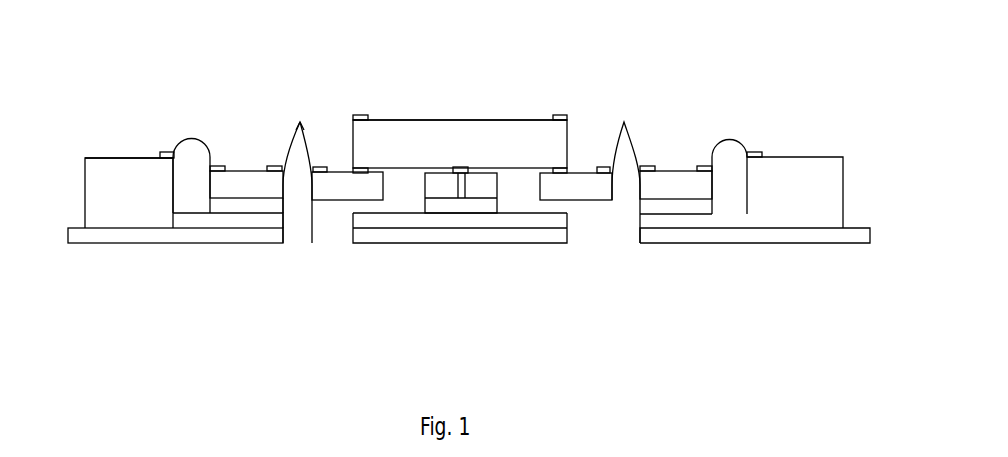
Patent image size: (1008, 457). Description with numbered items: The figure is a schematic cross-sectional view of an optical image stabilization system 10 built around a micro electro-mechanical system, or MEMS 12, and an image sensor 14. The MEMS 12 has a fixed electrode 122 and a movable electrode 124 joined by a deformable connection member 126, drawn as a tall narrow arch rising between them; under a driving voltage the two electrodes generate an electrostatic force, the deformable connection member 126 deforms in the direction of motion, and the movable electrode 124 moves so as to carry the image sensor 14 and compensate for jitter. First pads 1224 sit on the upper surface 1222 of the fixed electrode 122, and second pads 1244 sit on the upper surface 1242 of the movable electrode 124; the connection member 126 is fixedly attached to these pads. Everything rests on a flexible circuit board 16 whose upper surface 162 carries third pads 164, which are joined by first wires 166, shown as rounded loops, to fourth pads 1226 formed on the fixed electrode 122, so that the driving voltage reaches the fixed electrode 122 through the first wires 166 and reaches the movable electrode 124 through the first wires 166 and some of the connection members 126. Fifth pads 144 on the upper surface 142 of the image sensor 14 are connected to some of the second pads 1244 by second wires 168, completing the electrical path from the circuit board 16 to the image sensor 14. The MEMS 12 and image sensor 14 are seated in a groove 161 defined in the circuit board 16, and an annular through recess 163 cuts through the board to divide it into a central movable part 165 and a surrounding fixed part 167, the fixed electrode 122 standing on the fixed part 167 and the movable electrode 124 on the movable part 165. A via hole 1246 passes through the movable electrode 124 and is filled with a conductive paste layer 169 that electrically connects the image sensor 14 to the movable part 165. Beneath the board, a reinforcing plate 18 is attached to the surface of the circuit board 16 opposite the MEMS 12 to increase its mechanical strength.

The optical image stabilization system 10 is at (396, 29).
The micro electro-mechanical system (MEMS) 12 is at (385, 288).
The fixed electrode 122 is at (267, 188).
The movable electrode 124 is at (345, 188).
The deformable connection member 126 is at (300, 122).
The upper surface of the fixed electrode 1222 is at (245, 167).
The first pad 1224 is at (277, 166).
The fourth pad 1226 is at (705, 166).
The upper surface of the movable electrode 1242 is at (585, 170).
The second pad 1244 is at (608, 167).
The via hole 1246 is at (465, 188).
The image sensor 14 is at (483, 128).
The upper surface of the image sensor 142 is at (417, 120).
The fifth pad 144 is at (360, 115).
The circuit board 16 is at (93, 190).
The groove 161 is at (510, 203).
The upper surface of the circuit board 162 is at (110, 157).
The annular through recess 163 is at (630, 230).
The third pad 164 is at (168, 152).
The movable part 165 is at (555, 222).
The first wire 166 is at (195, 140).
The fixed part 167 is at (222, 223).
The second wire 168 is at (318, 167).
The conductive paste layer 169 is at (462, 189).
The reinforcing plate 18 is at (118, 233).